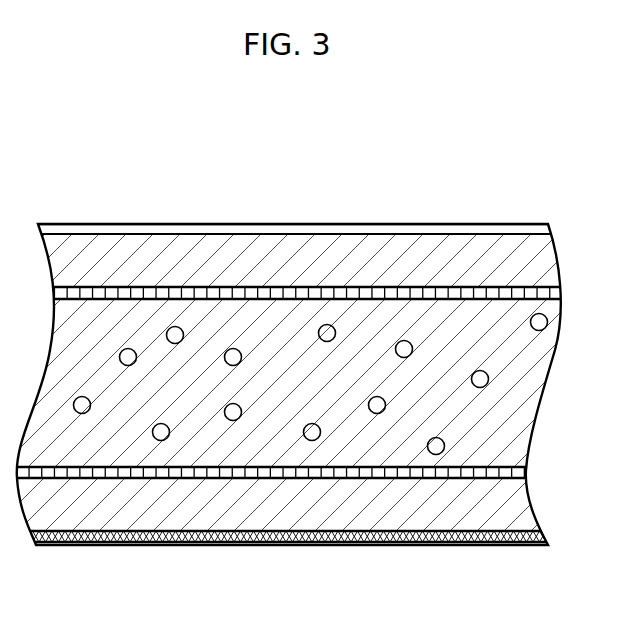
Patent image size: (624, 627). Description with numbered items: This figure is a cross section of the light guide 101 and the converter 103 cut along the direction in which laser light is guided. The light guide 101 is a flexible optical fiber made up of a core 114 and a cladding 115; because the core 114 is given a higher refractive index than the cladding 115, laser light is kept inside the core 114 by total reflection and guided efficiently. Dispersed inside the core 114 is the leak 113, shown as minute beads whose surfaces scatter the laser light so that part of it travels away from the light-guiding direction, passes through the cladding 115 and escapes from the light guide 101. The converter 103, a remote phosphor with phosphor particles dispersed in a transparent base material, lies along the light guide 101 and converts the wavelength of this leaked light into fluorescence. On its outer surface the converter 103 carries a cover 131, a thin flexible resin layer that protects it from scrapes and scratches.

The light guide 101 is at (218, 169).
The converter 103 is at (268, 240).
The leak 113 is at (162, 441).
The core 114 is at (103, 317).
The cladding 115 is at (177, 297).
The cover 131 is at (369, 223).